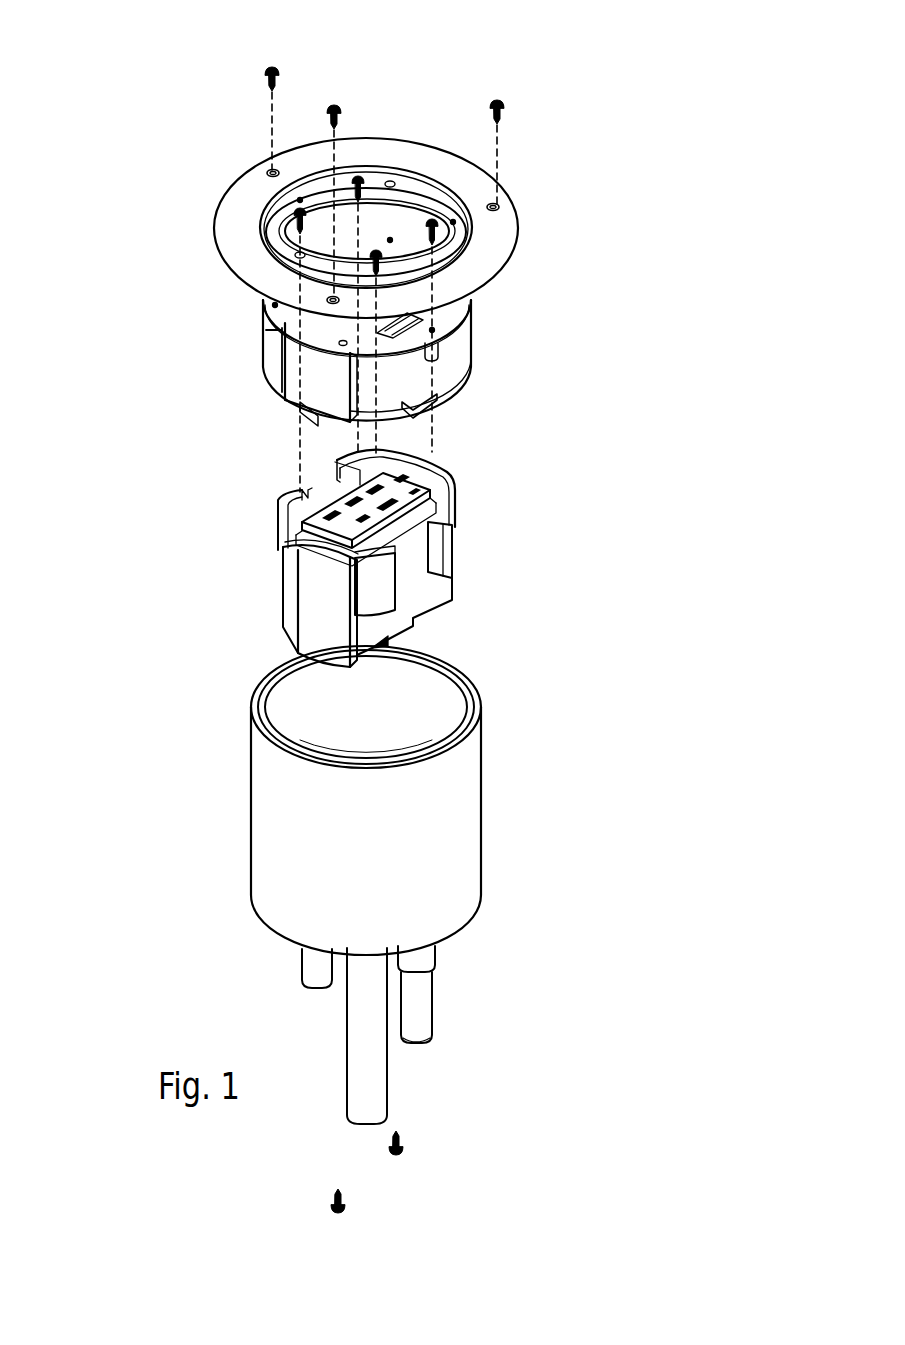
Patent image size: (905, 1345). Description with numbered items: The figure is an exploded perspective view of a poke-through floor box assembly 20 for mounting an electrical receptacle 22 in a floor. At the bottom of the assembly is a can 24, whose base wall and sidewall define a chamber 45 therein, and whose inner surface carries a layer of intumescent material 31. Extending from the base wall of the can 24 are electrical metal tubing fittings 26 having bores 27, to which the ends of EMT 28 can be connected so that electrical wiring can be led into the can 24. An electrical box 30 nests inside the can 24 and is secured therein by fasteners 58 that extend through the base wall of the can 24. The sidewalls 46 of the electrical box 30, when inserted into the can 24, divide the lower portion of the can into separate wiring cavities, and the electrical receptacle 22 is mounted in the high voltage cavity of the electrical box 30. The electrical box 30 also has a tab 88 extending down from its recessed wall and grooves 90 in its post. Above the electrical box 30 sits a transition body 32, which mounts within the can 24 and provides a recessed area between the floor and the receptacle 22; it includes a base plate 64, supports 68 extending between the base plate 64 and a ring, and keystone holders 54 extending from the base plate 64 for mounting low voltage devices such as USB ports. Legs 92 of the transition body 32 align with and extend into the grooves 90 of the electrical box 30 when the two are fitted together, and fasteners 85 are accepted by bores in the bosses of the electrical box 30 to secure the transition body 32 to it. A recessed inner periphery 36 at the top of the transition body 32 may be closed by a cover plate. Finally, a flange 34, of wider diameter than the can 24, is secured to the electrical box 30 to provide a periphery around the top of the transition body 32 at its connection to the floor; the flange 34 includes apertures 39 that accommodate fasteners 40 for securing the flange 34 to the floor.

The poke-through floor box assembly 20 is at (114, 107).
The fasteners 40 is at (503, 113).
The recessed inner periphery 36 is at (280, 223).
The flange 34 is at (507, 203).
The apertures 39 is at (499, 209).
The fasteners 85 is at (440, 250).
The transition body 32 is at (472, 344).
The supports 68 is at (346, 385).
The base plate 64 is at (277, 378).
The legs 92 is at (312, 418).
The keystone holders 54 is at (433, 410).
The grooves 90 is at (283, 528).
The electrical receptacle 22 is at (432, 510).
The electrical box 30 is at (457, 553).
The tab 88 is at (410, 627).
The layer of intumescent material 31 is at (267, 695).
The can 24 is at (470, 698).
The chamber 45 is at (380, 719).
The sidewalls 46 is at (343, 613).
The electrical metal tubing (EMT) fittings 26 is at (438, 952).
The EMT 28 is at (432, 1012).
The bores 27 is at (413, 1043).
The fasteners 58 is at (402, 1134).